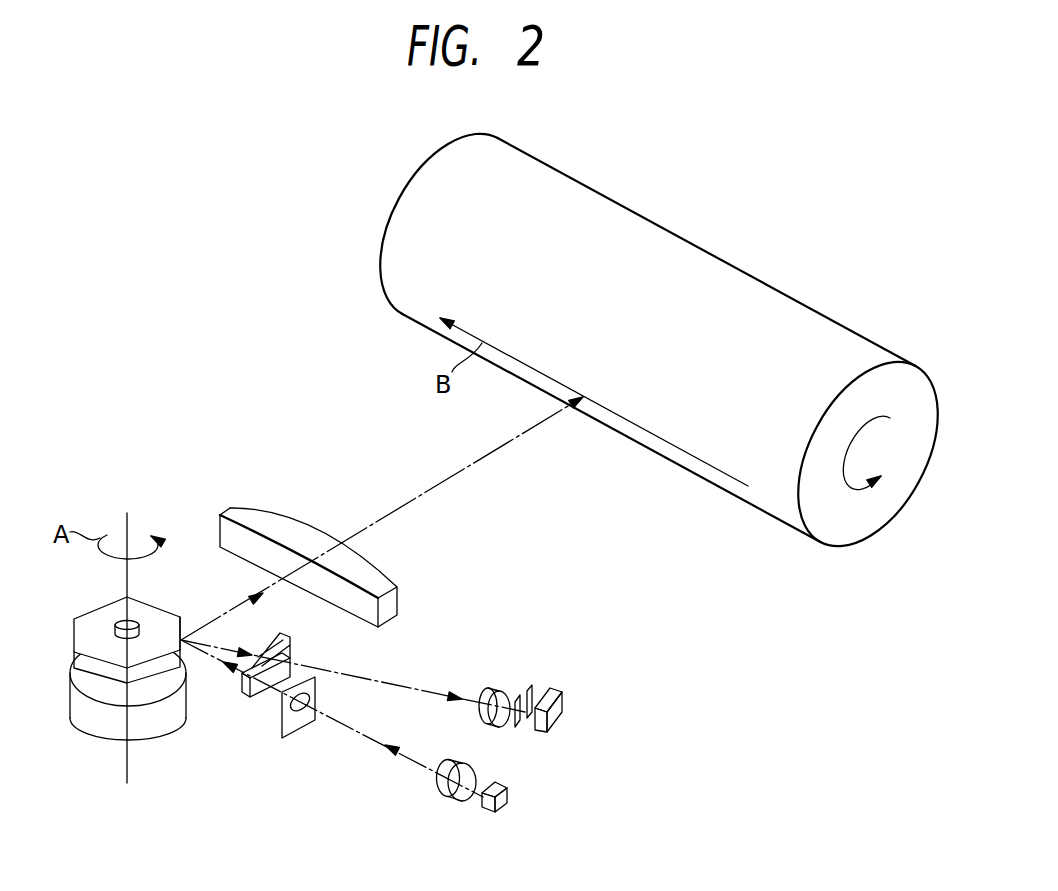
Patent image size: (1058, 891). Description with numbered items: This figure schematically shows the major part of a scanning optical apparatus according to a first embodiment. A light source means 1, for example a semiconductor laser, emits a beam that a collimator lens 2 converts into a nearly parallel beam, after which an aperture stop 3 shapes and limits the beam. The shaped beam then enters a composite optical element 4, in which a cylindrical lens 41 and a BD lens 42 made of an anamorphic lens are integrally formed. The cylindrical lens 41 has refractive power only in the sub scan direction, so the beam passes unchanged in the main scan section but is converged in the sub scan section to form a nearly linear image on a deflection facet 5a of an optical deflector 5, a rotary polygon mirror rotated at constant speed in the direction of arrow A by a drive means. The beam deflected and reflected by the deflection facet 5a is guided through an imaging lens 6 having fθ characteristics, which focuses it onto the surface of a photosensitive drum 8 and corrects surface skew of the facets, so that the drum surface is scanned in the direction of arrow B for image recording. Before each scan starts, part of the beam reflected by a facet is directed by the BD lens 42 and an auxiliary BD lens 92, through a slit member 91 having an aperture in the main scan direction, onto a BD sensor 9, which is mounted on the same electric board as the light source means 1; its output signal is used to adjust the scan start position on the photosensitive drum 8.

The light source means 1 is at (507, 790).
The collimator lens 2 is at (443, 798).
The aperture stop 3 is at (282, 722).
The composite optical element 4 is at (310, 656).
The cylindrical lens 41 is at (297, 668).
The BD lens 42 is at (284, 640).
The optical deflector 5 is at (87, 620).
The deflection facet 5a is at (183, 657).
The imaging lens 6 is at (270, 508).
The photosensitive drum 8 is at (637, 422).
The BD sensor 9 is at (562, 702).
The slit member 91 is at (515, 727).
The auxiliary BD lens 92 is at (502, 692).